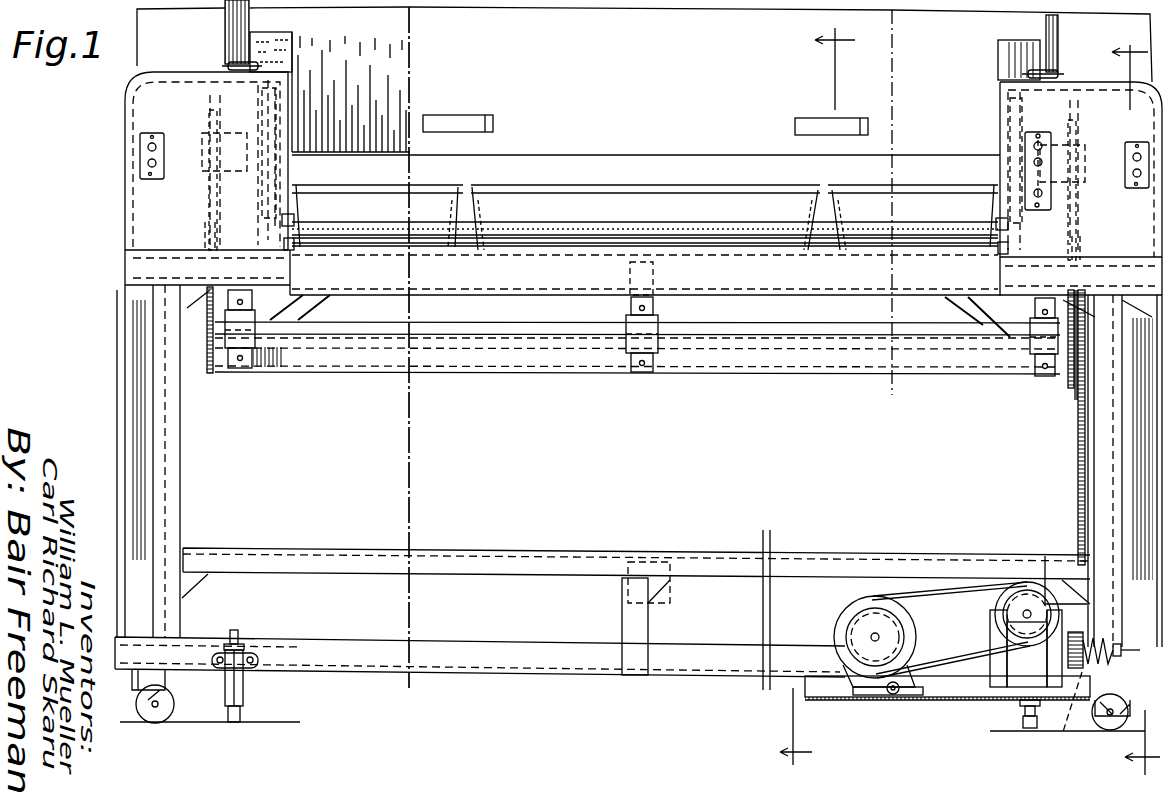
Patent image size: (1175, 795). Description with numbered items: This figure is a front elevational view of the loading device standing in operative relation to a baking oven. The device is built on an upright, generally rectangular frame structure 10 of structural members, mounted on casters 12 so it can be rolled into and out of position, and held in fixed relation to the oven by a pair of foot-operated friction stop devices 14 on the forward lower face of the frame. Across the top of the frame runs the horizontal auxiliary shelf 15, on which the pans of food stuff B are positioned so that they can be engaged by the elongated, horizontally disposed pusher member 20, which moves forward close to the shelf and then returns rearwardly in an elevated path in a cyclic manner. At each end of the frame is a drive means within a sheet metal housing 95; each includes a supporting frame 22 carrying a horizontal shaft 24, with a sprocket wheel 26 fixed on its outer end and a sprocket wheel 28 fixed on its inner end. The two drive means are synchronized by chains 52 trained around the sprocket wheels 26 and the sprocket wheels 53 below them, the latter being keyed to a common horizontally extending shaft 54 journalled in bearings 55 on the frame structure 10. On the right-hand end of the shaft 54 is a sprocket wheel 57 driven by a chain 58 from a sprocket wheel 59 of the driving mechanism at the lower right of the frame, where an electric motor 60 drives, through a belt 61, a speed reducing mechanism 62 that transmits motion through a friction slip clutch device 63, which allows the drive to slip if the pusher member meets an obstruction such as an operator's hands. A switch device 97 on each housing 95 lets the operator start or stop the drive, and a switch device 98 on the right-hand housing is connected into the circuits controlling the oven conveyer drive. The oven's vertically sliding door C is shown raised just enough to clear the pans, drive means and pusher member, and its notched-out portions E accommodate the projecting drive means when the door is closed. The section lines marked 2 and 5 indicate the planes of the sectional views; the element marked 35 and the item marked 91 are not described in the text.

The frame structure 10 is at (182, 496).
The casters 12 is at (165, 690).
The friction stop devices 14 is at (244, 688).
The auxiliary shelf 15 is at (540, 252).
The pusher member 20 is at (698, 228).
The supporting frame 22 is at (262, 88).
The horizontal shaft 24 is at (232, 170).
The sprocket wheel 26 is at (208, 119).
The sprocket wheel 28 is at (268, 93).
The end bracket 35 is at (296, 220).
The chains 52 is at (210, 222).
The sprocket wheels 53 is at (210, 372).
The common horizontally extending shaft 54 is at (548, 330).
The bearings 55 is at (246, 318).
The sprocket wheel 57 is at (1080, 366).
The chain 58 is at (1077, 505).
The sprocket wheel 59 is at (1067, 714).
The electric motor 60 is at (862, 625).
The belt 61 is at (938, 612).
The speed reducing mechanism 62 is at (1025, 660).
The friction slip clutch device 63 is at (1104, 641).
The collar 91 is at (228, 66).
The sheet metal housing 95 is at (146, 197).
The switch device 97 is at (146, 142).
The switch device 98 is at (1040, 134).
The pans of food stuff B is at (505, 205).
The vertically sliding door C is at (644, 347).
The notched-out portions E is at (275, 52).
The section line 2 is at (817, 394).
The section line 5 is at (1136, 406).